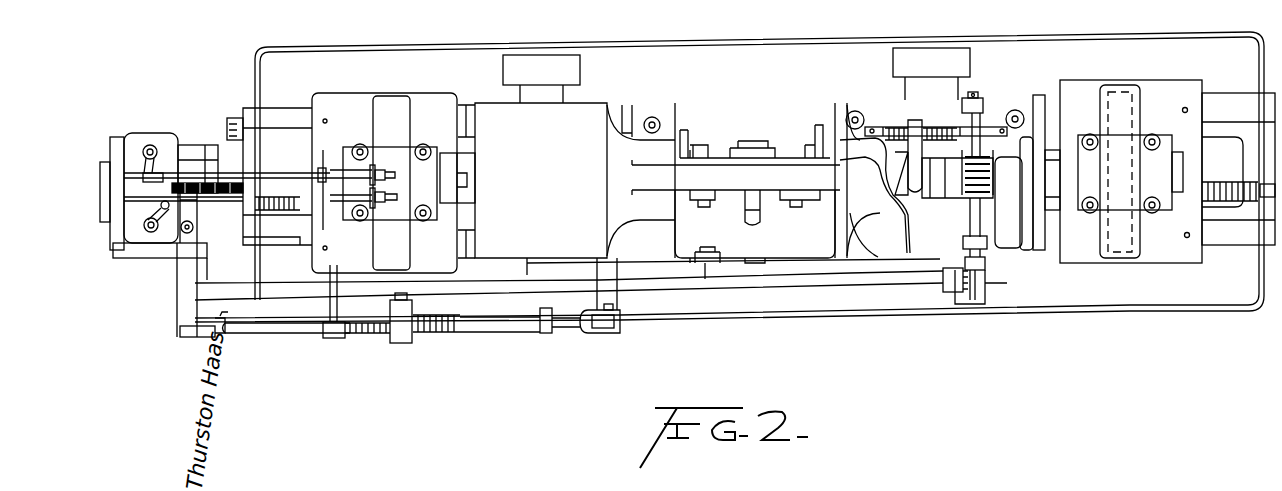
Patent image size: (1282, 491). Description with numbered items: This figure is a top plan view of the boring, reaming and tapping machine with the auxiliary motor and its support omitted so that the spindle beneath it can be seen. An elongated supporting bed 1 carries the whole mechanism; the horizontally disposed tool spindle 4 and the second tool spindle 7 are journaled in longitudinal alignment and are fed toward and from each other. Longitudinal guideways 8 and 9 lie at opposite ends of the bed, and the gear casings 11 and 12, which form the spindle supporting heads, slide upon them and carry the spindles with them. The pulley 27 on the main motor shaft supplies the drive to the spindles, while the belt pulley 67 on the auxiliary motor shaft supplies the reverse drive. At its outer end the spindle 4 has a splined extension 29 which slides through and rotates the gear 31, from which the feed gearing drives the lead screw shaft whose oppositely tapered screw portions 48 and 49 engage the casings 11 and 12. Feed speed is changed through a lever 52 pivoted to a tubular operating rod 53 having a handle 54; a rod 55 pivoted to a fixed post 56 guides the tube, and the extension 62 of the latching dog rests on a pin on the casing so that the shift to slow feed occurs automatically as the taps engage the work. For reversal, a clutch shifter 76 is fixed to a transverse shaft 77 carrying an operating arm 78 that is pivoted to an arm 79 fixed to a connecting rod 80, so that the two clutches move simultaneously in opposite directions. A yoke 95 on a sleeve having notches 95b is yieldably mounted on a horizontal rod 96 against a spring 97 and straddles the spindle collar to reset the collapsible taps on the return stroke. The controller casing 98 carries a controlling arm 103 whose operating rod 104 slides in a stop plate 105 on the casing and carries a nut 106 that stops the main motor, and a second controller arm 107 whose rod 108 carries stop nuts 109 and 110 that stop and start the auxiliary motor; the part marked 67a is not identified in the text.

The supporting bed 1 is at (705, 316).
The tool spindle 4 is at (470, 166).
The second tool spindle 7 is at (938, 197).
The guideway 8 is at (272, 122).
The guideway 9 is at (1228, 100).
The gear casing 11 is at (402, 130).
The gear casing 12 is at (1163, 95).
The pulley 27 is at (582, 79).
The splined extension 29 is at (243, 176).
The gear 31 is at (184, 166).
The tapered screw portion 48 is at (291, 214).
The tapered screw portion 49 is at (1228, 183).
The lever 52 is at (204, 338).
The tubular operating rod 53 is at (300, 333).
The handle 54 is at (544, 328).
The rod 55 is at (570, 329).
The post 56 is at (617, 327).
The extension 62 is at (361, 335).
The belt pulley 67 is at (892, 62).
The stop pin 67a is at (972, 92).
The clutch shifter 76 is at (962, 243).
The transverse shaft 77 is at (970, 225).
The operating arm 78 is at (986, 266).
The arm 79 is at (944, 292).
The connecting rod 80 is at (807, 282).
The yoke 95 is at (900, 127).
The notches 95b is at (963, 160).
The horizontal rod 96 is at (878, 126).
The spring 97 is at (884, 140).
The controller casing 98 is at (170, 146).
The controlling arm 103 is at (160, 279).
The operating rod 104 is at (333, 196).
The stop plate 105 is at (378, 181).
The nut 106 is at (383, 203).
The controller arm 107 is at (134, 130).
The rod 108 is at (322, 166).
The stop nut 109 is at (330, 166).
The stop nut 110 is at (378, 168).